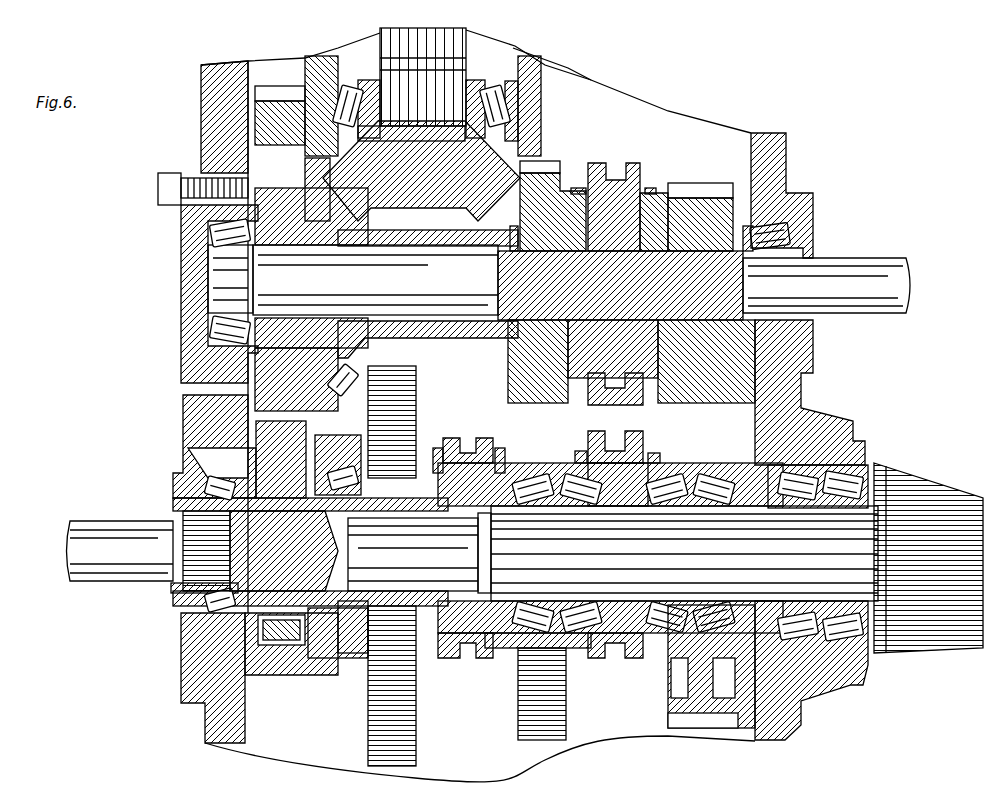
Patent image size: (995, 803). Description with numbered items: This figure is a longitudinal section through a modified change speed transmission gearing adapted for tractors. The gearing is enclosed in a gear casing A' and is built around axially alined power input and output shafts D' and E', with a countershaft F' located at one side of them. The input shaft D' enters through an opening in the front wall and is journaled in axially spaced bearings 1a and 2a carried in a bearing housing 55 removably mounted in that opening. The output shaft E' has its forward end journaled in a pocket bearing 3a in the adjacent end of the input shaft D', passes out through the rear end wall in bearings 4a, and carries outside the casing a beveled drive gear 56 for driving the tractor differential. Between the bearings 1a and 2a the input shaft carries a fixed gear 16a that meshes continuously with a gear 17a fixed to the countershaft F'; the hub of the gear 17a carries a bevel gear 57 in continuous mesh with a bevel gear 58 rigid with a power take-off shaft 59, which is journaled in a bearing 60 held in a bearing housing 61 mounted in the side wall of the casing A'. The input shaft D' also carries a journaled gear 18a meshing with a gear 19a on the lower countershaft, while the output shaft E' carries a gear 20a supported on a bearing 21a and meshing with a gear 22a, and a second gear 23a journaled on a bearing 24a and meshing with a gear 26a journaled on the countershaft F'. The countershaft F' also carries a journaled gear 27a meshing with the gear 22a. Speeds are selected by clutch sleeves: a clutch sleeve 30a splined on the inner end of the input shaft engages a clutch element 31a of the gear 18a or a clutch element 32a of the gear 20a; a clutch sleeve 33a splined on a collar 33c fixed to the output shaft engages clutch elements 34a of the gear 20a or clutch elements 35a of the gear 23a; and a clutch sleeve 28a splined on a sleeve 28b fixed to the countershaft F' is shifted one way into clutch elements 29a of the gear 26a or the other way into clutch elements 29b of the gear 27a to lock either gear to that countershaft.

The gear casing A' is at (335, 402).
The bearing housing 55 is at (193, 672).
The power take-off shaft 59 is at (460, 30).
The bearing 60 is at (490, 98).
The bearing housing 61 is at (538, 74).
The bevel gear 58 is at (410, 197).
The countershaft F' is at (559, 281).
The gear 27a is at (538, 153).
The clutch elements 29b is at (567, 180).
The clutch sleeve 28a is at (604, 175).
The sleeve 28b is at (622, 193).
The clutch elements 29a is at (672, 185).
The gear 26a is at (700, 193).
The bevel gear 57 is at (343, 383).
The clutch element 31a is at (428, 440).
The clutch sleeve 30a is at (456, 448).
The clutch element 32a is at (492, 440).
The clutch sleeve 33a is at (606, 440).
The clutch elements 34a is at (570, 445).
The clutch elements 35a is at (645, 447).
The collar 33c is at (610, 495).
The bearing 21a is at (512, 500).
The bearing 24a is at (722, 497).
The bearings 4a is at (832, 492).
The output shaft E' is at (678, 553).
The beveled drive gear 56 is at (920, 470).
The input shaft D' is at (120, 571).
The bearing 2a is at (210, 607).
The pocket bearing 3a is at (405, 520).
The gear 17a is at (248, 433).
The gear 16a is at (280, 627).
The bearing 1a is at (338, 640).
The gear 18a is at (372, 625).
The gear 19a is at (410, 742).
The gear 20a is at (540, 650).
The gear 22a is at (540, 732).
The gear 23a is at (690, 712).